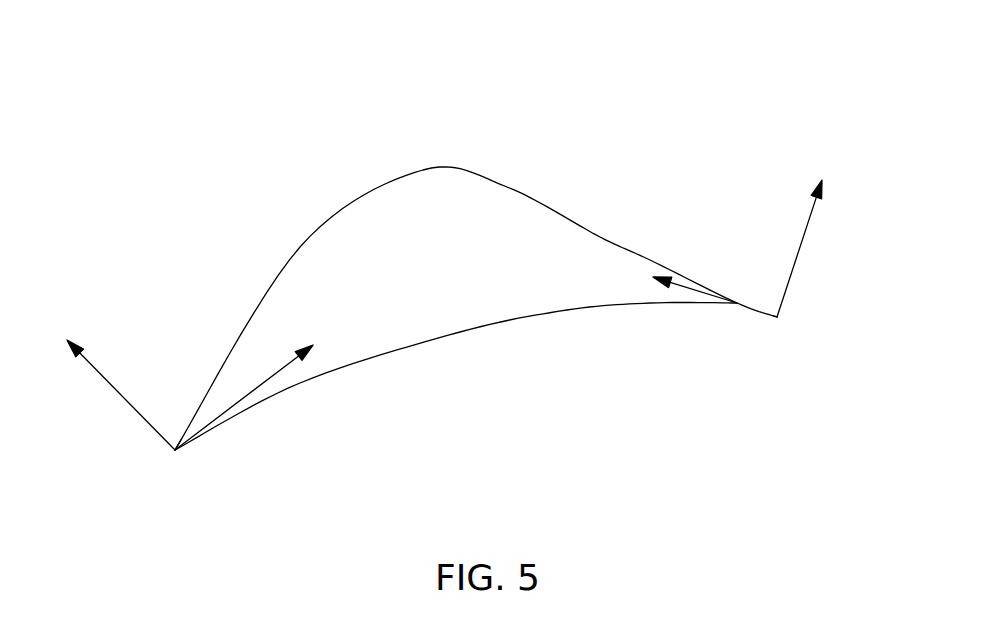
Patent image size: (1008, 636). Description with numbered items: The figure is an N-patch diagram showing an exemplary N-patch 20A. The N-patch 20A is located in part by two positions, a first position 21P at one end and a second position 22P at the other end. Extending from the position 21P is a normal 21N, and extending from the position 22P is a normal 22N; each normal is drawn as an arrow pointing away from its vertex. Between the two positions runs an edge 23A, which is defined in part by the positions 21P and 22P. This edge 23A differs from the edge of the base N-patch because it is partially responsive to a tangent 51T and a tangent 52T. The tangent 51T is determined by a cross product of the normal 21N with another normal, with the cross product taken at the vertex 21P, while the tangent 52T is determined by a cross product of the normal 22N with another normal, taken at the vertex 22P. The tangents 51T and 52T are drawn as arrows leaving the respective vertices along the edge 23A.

The N-patch 20A is at (476, 243).
The position 21P is at (175, 453).
The position 22P is at (777, 318).
The normal 21N is at (107, 375).
The normal 22N is at (795, 265).
The tangent 51T is at (260, 382).
The tangent 52T is at (698, 292).
The edge 23A is at (460, 332).